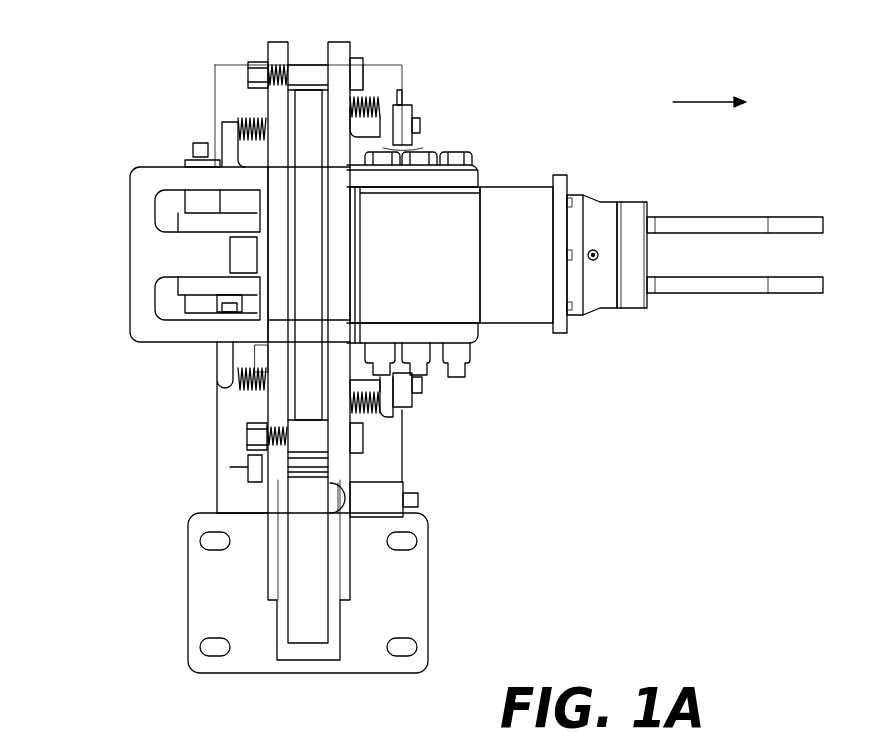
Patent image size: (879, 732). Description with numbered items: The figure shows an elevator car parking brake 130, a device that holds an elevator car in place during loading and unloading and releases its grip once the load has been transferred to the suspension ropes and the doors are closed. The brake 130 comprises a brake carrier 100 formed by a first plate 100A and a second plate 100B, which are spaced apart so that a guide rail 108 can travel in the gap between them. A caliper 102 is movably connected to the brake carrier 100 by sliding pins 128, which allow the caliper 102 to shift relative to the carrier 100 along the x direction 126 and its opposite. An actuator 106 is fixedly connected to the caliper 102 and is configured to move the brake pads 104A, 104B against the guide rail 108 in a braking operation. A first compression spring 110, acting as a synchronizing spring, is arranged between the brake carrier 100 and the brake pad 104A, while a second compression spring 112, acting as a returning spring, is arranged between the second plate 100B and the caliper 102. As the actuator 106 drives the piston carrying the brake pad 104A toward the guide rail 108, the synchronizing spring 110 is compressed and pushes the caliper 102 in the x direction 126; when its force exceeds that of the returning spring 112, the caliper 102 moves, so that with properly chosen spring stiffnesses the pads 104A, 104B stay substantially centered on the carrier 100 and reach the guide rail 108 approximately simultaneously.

The brake carrier 100 is at (277, 408).
The first plate 100A is at (338, 425).
The second plate 100B is at (277, 440).
The caliper 102 is at (403, 332).
The brake pad 104A is at (381, 146).
The brake pad 104B is at (263, 353).
The actuator 106 is at (590, 202).
The guide rail 108 is at (305, 108).
The first compression spring 110 is at (362, 112).
The second compression spring 112 is at (255, 127).
The x direction 126 is at (697, 100).
The sliding pins 128 is at (420, 128).
The elevator car parking brake 130 is at (120, 127).